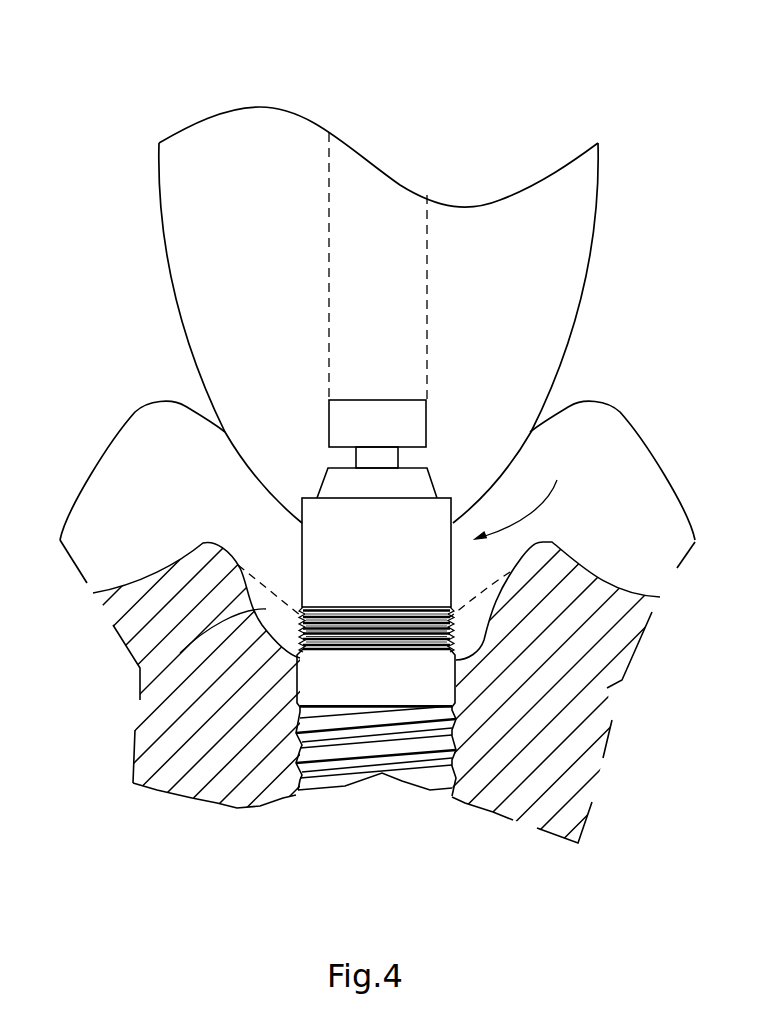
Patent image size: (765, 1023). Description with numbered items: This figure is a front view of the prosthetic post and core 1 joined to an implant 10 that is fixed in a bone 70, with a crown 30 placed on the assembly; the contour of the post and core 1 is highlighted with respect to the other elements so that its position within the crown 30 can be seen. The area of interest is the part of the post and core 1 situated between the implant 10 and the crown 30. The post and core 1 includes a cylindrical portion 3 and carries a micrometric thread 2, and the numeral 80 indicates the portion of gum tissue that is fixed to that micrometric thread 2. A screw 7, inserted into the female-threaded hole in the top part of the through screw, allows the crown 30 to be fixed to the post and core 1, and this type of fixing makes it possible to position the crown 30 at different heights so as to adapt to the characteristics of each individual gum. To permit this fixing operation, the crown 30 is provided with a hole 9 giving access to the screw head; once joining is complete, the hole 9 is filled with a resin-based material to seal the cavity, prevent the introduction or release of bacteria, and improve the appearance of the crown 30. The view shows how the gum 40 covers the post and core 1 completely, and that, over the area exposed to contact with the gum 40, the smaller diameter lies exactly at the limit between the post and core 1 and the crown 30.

The post and core 1 is at (523, 500).
The micrometric thread 2 is at (453, 640).
The cylindrical portion 3 is at (300, 560).
The screw 7 is at (403, 408).
The hole 9 is at (400, 198).
The implant 10 is at (473, 701).
The crown 30 is at (257, 107).
The gum 40 is at (135, 412).
The bone 70 is at (215, 793).
The portion of tissue fixed to the micrometric thread 80 is at (140, 678).